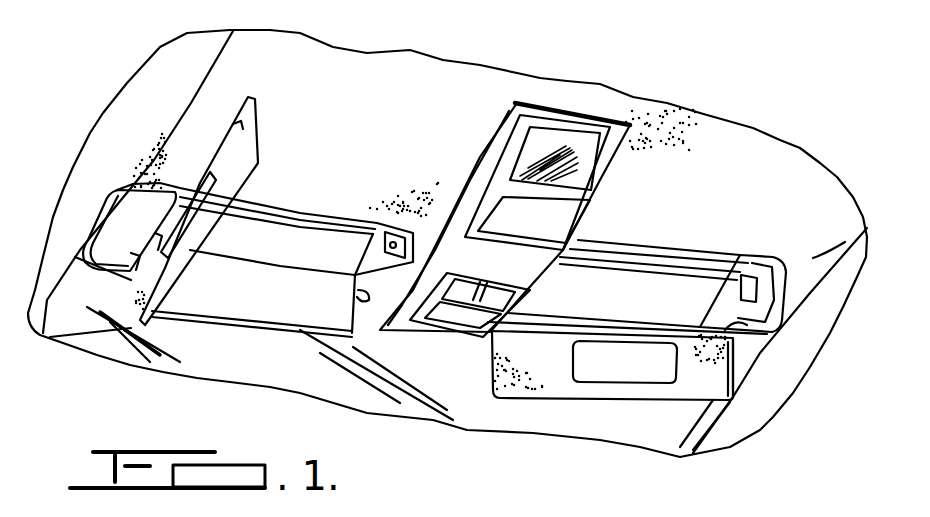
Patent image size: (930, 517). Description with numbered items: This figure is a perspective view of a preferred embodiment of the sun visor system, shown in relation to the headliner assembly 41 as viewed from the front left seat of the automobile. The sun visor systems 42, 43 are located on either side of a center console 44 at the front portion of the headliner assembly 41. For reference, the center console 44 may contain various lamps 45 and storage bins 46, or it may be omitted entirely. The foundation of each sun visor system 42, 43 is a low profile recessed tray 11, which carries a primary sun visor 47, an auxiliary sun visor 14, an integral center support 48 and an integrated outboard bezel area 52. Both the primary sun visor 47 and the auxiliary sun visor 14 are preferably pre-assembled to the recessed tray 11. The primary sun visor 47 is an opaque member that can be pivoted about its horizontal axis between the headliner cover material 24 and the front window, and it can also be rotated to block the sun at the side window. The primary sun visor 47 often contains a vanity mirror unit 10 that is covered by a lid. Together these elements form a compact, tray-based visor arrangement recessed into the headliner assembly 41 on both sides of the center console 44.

The vanity mirror unit 10 is at (592, 366).
The recessed tray 11 is at (290, 215).
The auxiliary sun visor 14 is at (240, 298).
The headliner cover material 24 is at (386, 84).
The headliner assembly 41 is at (108, 134).
The sun visor system 42 is at (107, 307).
The sun visor system 43 is at (758, 381).
The center console 44 is at (475, 352).
The lamps 45 is at (434, 320).
The storage bins 46 is at (548, 218).
The primary sun visor 47 is at (232, 147).
The integral center support 48 is at (352, 311).
The integrated outboard bezel area 52 is at (737, 331).